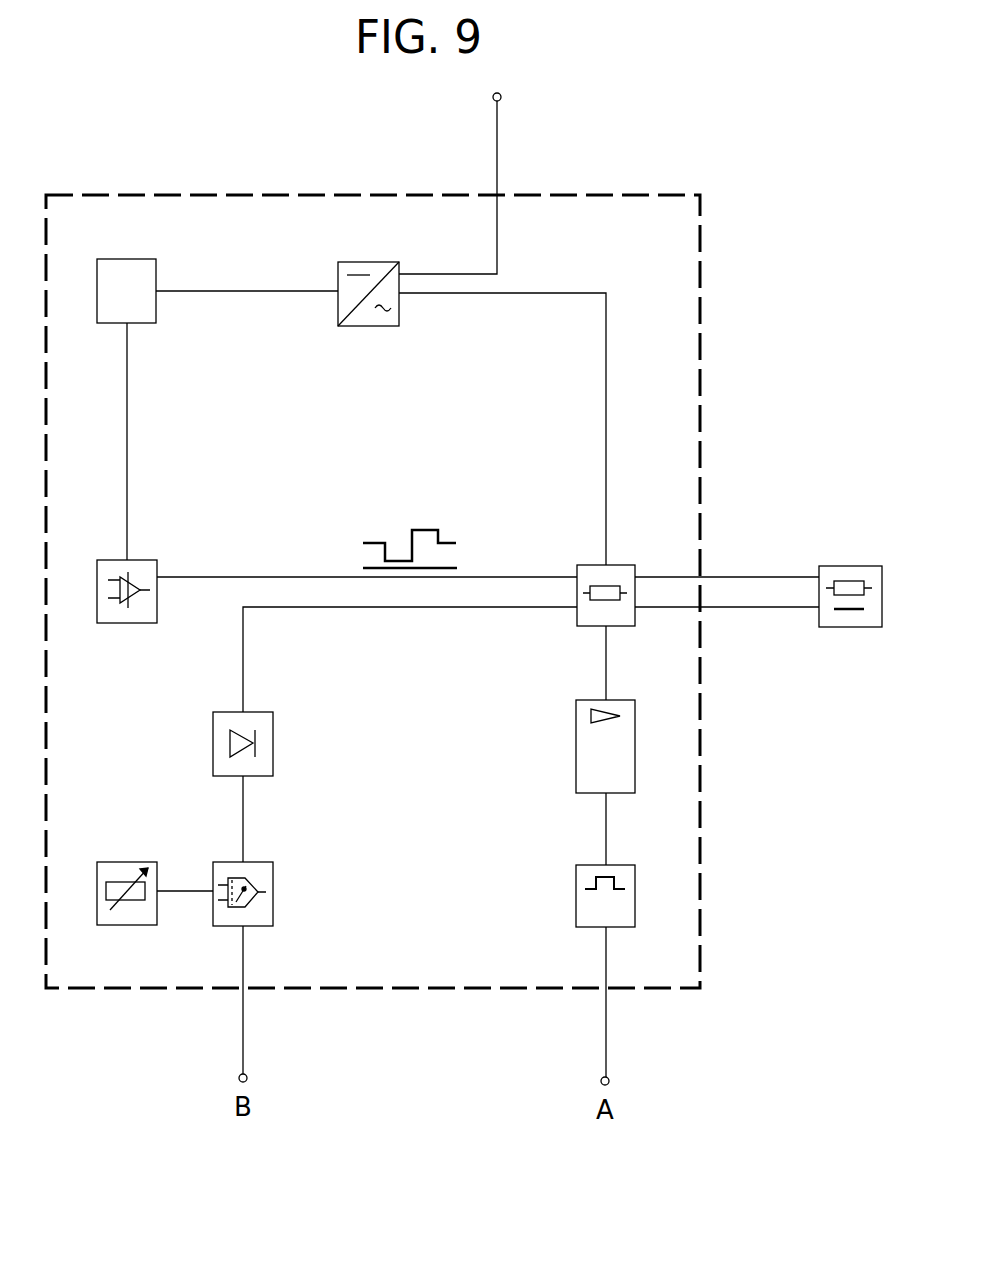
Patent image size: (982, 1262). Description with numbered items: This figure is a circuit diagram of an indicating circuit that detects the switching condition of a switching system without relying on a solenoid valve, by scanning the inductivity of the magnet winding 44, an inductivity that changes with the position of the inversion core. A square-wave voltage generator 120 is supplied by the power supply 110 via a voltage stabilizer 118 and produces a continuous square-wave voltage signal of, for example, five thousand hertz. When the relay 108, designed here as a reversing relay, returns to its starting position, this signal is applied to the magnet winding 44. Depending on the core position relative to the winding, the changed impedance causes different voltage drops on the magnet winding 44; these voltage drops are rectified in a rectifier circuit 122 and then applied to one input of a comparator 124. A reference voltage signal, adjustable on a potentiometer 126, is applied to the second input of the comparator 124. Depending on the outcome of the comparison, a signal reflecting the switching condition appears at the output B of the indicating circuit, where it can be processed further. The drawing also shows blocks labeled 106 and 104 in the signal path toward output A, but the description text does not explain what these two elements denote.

The voltage stabilizer 118 is at (155, 323).
The power supply 110 is at (376, 328).
The square-wave voltage generator 120 is at (145, 572).
The relay 108 is at (580, 572).
The magnet winding 44 is at (846, 570).
The rectifier circuit 122 is at (265, 722).
The comparator 124 is at (265, 872).
The potentiometer 126 is at (115, 872).
The amplifier 106 is at (585, 752).
The pulse generator 104 is at (585, 903).